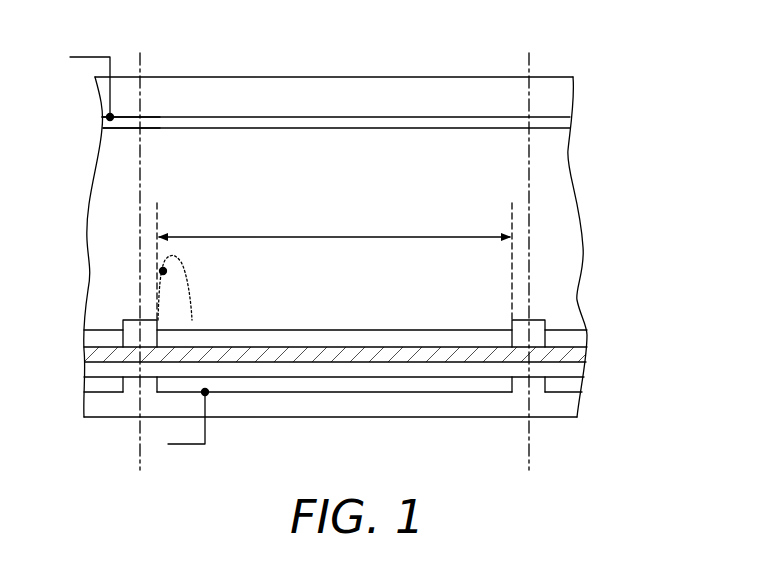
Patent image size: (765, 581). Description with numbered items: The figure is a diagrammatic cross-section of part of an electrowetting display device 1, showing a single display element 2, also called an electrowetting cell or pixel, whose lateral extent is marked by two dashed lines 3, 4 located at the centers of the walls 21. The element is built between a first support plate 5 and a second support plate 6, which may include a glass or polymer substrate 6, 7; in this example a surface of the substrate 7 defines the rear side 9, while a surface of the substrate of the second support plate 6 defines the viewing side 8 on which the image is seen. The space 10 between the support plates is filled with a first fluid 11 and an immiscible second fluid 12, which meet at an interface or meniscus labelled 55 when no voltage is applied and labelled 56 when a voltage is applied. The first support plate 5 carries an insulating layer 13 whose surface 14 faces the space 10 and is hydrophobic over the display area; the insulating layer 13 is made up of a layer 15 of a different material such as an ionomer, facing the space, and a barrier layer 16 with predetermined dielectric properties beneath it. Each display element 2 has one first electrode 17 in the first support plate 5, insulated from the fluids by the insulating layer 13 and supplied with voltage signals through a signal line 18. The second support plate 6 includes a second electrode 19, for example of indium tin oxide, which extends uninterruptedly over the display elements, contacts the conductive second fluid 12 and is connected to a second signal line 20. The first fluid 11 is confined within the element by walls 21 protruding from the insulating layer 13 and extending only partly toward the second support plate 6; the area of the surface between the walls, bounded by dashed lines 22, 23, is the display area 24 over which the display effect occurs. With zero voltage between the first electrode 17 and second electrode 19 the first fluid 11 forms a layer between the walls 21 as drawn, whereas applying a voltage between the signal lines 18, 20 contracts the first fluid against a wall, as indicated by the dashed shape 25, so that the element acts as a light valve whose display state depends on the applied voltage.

The electrowetting display device 1 is at (632, 47).
The display element 2 is at (333, 34).
The dashed line 3 is at (140, 60).
The dashed line 4 is at (529, 60).
The first support plate 5 is at (361, 369).
The second support plate 6 is at (360, 80).
The substrate 7 is at (557, 408).
The viewing side 8 is at (232, 77).
The rear side 9 is at (296, 417).
The space 10 is at (400, 145).
The first fluid 11 is at (478, 338).
The second fluid 12 is at (573, 210).
The insulating layer 13 is at (348, 328).
The surface 14 is at (380, 348).
The layer of different material 15 is at (330, 357).
The barrier layer 16 is at (283, 366).
The first electrode 17 is at (403, 383).
The signal line 18 is at (187, 446).
The second electrode 19 is at (126, 124).
The second signal line 20 is at (87, 53).
The walls 21 is at (132, 332).
The dashed line 22 is at (510, 205).
The dashed line 23 is at (160, 207).
The display area 24 is at (334, 223).
The dashed shape 25 is at (163, 271).
The interface 55 is at (430, 329).
The interface 56 is at (190, 293).